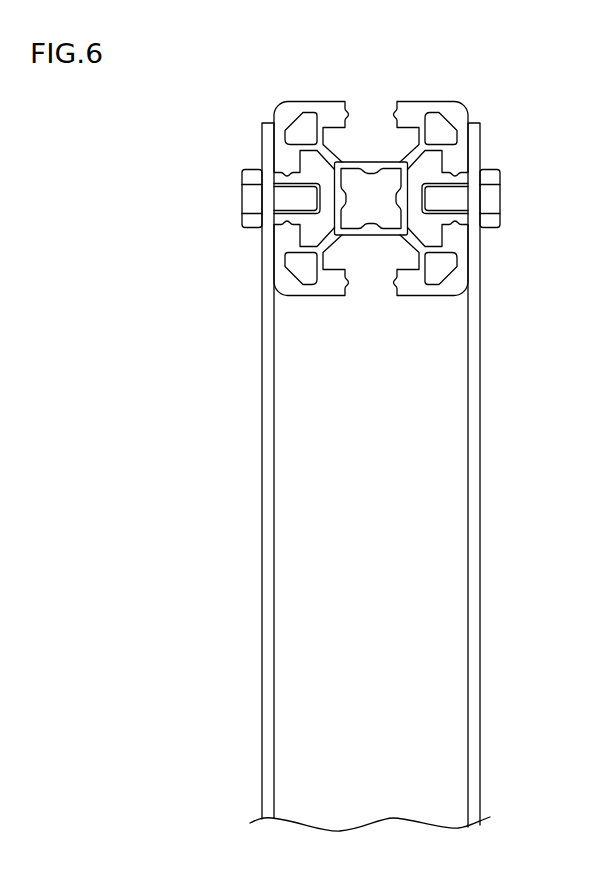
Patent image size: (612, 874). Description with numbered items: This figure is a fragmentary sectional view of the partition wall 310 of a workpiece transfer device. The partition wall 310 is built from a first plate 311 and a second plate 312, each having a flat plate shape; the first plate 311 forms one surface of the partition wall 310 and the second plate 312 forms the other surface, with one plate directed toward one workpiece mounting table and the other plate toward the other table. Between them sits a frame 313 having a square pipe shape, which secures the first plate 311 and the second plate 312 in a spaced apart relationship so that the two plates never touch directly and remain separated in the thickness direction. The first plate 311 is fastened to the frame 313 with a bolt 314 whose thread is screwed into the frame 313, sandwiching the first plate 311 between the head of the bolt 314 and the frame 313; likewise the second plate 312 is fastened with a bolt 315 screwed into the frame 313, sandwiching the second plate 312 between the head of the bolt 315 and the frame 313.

The partition wall 310 is at (233, 155).
The first plate 311 is at (263, 444).
The second plate 312 is at (477, 441).
The frame 313 is at (332, 112).
The bolt 314 is at (244, 204).
The bolt 315 is at (490, 205).